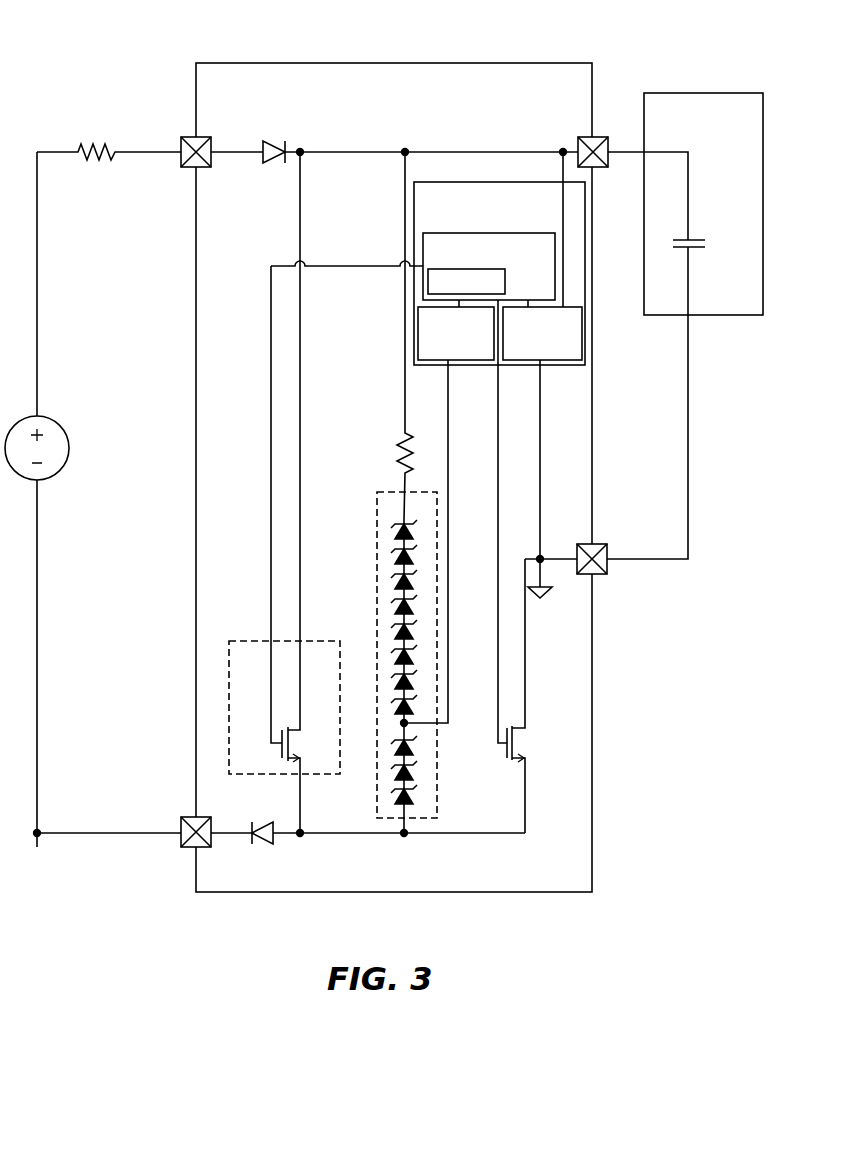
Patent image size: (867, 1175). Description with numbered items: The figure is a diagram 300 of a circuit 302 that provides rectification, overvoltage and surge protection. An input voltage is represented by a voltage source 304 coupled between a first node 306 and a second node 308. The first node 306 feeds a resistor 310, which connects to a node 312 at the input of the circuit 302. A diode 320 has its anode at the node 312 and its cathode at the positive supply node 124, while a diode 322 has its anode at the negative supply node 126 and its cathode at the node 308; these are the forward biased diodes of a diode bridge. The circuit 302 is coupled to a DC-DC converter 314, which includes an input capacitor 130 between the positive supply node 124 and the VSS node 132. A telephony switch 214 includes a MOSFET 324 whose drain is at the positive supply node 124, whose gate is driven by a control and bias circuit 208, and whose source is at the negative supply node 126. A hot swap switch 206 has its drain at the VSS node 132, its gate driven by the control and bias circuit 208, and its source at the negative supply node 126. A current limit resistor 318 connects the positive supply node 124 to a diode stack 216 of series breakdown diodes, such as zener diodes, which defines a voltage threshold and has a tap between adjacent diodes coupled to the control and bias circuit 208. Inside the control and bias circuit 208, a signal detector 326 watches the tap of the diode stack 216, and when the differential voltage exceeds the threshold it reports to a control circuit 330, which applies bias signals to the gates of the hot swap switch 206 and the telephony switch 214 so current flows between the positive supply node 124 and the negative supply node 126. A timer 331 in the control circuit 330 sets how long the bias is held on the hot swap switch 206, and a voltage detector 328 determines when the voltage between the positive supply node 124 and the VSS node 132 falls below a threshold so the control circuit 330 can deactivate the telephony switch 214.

The diagram 300 is at (80, 53).
The circuit 302 is at (213, 63).
The voltage source 304 is at (62, 428).
The first node 306 is at (37, 298).
The second node 308 is at (67, 833).
The resistor 310 is at (107, 150).
The node 312 is at (165, 150).
The DC-DC converter 314 is at (675, 93).
The current limit resistor 318 is at (397, 440).
The diode 320 is at (266, 146).
The diode 322 is at (274, 822).
The MOSFET 324 is at (292, 742).
The signal detector 326 is at (418, 337).
The voltage detector 328 is at (582, 343).
The control circuit 330 is at (496, 236).
The timer 331 is at (504, 290).
The positive supply node 124 is at (481, 150).
The negative supply node 126 is at (364, 835).
The capacitor 130 is at (692, 240).
The VSS node 132 is at (605, 573).
The hot swap switch 206 is at (522, 762).
The control and bias circuit 208 is at (481, 181).
The telephony switch 214 is at (308, 641).
The diode stack 216 is at (387, 492).